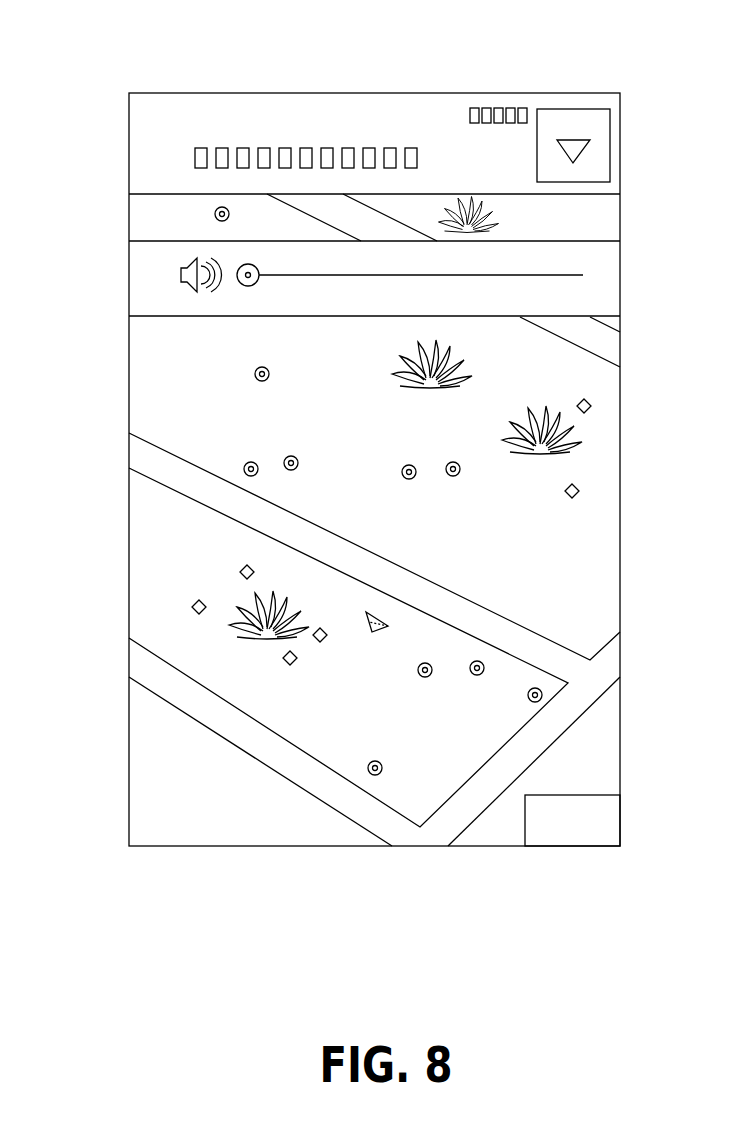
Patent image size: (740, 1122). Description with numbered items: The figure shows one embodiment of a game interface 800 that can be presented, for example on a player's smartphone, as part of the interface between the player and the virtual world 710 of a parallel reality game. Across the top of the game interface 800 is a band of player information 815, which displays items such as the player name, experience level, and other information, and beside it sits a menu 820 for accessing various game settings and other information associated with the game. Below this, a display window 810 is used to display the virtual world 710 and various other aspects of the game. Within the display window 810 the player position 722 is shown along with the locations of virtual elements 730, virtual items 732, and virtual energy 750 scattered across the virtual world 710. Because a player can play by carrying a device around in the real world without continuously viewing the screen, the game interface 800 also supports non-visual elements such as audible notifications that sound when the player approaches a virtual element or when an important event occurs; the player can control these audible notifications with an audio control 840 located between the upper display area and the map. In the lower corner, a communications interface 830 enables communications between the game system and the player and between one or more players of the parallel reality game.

The game interface 800 is at (388, 43).
The player information 815 is at (140, 113).
The menu 820 is at (600, 145).
The display window 810 is at (612, 222).
The audio control 840 is at (142, 260).
The virtual world 710 is at (612, 552).
The virtual elements 730 is at (397, 365).
The virtual energy 750 is at (270, 378).
The virtual items 732 is at (240, 572).
The player position 722 is at (370, 620).
The communications interface 830 is at (613, 825).